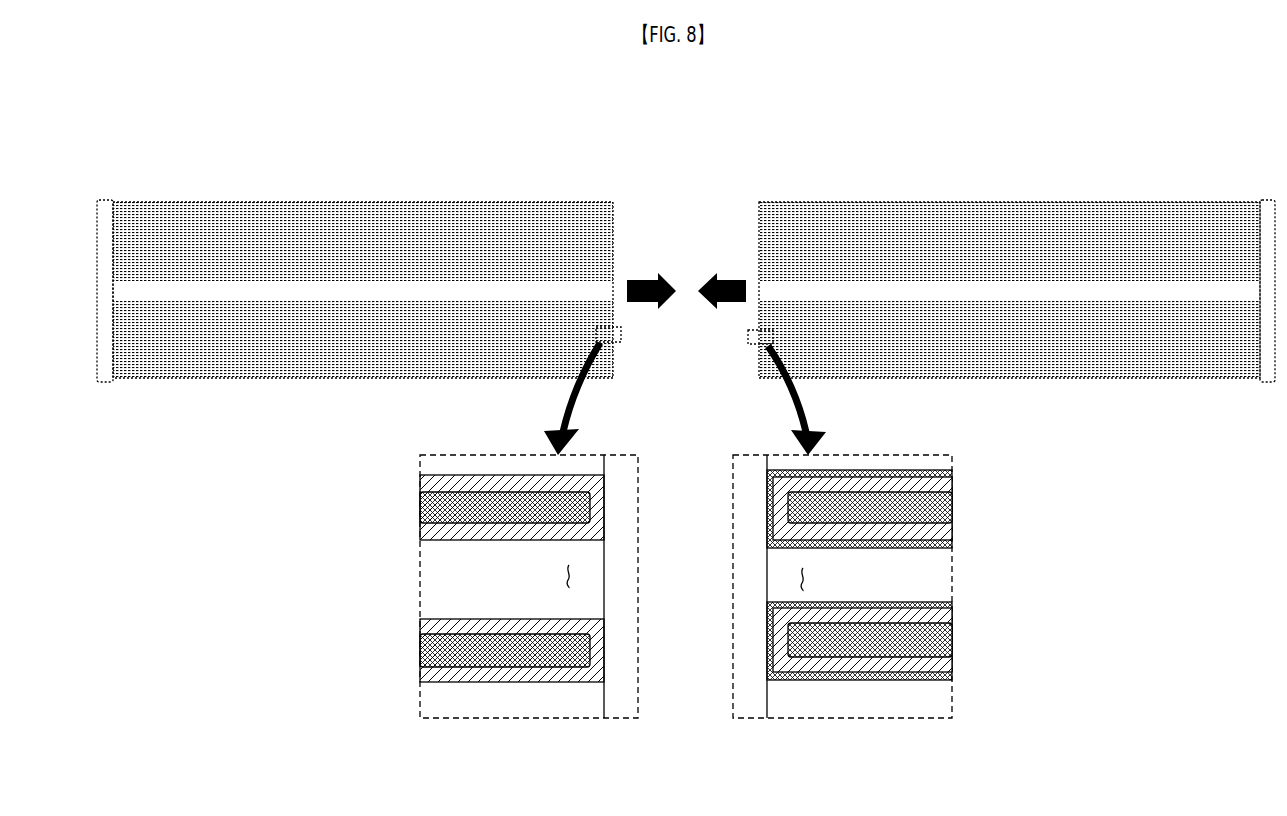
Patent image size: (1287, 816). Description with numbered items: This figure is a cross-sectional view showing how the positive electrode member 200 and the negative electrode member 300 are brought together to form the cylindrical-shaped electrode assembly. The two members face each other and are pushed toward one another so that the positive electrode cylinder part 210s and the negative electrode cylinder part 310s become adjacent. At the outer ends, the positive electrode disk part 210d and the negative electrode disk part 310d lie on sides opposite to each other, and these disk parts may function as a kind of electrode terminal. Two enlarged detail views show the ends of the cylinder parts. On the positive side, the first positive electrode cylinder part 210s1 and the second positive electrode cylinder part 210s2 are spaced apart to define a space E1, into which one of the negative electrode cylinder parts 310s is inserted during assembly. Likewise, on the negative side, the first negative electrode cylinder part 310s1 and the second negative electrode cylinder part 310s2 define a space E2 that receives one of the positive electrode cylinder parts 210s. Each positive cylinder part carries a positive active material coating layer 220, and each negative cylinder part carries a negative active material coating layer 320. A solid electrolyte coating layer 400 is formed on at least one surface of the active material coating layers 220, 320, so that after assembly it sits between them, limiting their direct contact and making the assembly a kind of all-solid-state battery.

The positive electrode member 200 is at (364, 181).
The positive electrode disk part 210d is at (101, 384).
The negative electrode member 300 is at (1008, 179).
The negative electrode disk part 310d is at (1268, 387).
The positive active material coating layer 220 is at (470, 483).
The first positive electrode cylinder part 210s1 is at (432, 508).
The second positive electrode cylinder part 210s2 is at (432, 650).
The positive electrode cylinder part 210s is at (322, 497).
The space E1 is at (571, 577).
The negative active material coating layer 320 is at (885, 486).
The solid electrolyte coating layer 400 is at (925, 472).
The first negative electrode cylinder part 310s1 is at (943, 508).
The second negative electrode cylinder part 310s2 is at (945, 640).
The negative electrode cylinder part 310s is at (1046, 497).
The space E2 is at (801, 579).